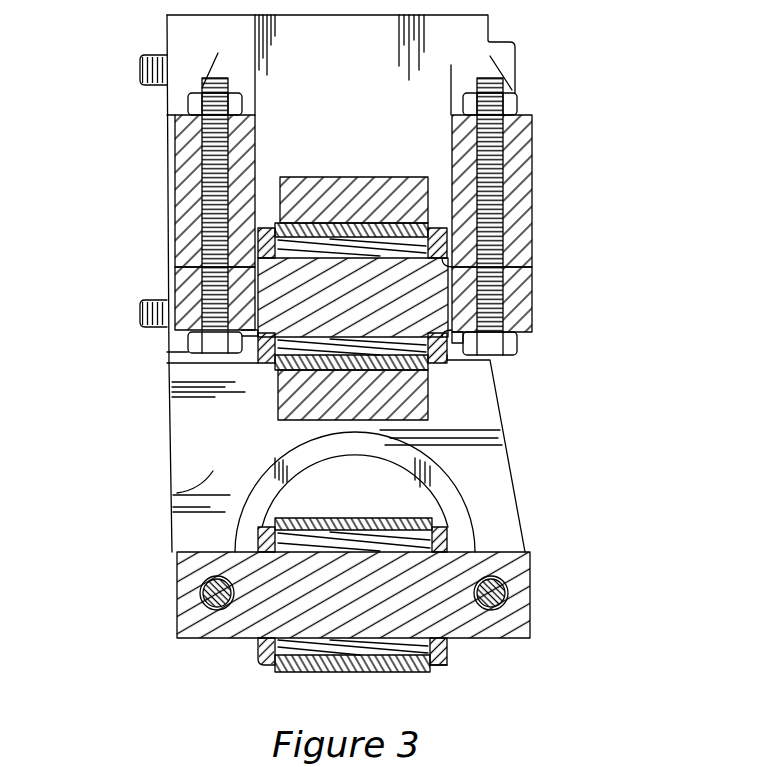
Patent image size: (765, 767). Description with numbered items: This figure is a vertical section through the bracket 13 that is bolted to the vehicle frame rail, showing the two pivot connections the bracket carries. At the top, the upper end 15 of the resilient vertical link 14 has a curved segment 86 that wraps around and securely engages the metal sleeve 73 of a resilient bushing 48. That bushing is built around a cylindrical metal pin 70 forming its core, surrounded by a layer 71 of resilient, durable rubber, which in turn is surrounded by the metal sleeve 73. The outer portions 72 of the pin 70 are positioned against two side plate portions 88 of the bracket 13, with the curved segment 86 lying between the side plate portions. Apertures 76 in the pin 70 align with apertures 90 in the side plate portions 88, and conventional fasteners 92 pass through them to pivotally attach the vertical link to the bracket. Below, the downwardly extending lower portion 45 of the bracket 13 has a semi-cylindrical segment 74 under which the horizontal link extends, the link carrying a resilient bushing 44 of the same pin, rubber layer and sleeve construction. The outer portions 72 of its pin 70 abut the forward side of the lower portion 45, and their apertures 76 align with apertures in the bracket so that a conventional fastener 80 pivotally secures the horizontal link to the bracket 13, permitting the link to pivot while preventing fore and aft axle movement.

The bracket 13 is at (213, 47).
The resilient vertical link 14 is at (322, 166).
The upper end 15 is at (372, 177).
The resilient bushing 44 is at (456, 658).
The lower portion 45 is at (193, 493).
The resilient bushing 48 is at (548, 334).
The cylindrical metal pin 70 is at (173, 330).
The layer of resilient rubber 71 is at (320, 216).
The outer portions 72 is at (185, 272).
The metal sleeve 73 is at (360, 224).
The semi-cylindrical segment 74 is at (450, 505).
The apertures 76 is at (208, 575).
The fastener 80 is at (200, 593).
The curved segment 86 is at (397, 191).
The side plate portions 88 is at (183, 182).
The apertures 90 is at (533, 178).
The fasteners 92 is at (188, 103).